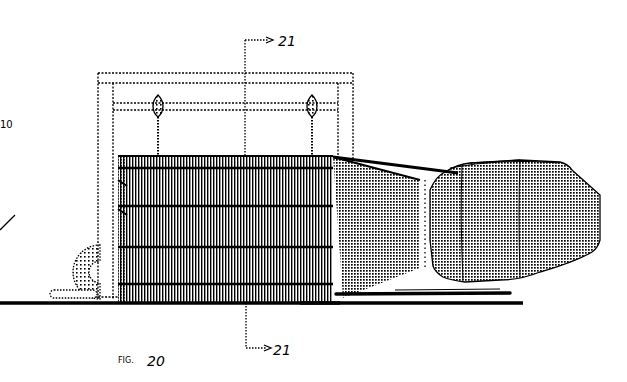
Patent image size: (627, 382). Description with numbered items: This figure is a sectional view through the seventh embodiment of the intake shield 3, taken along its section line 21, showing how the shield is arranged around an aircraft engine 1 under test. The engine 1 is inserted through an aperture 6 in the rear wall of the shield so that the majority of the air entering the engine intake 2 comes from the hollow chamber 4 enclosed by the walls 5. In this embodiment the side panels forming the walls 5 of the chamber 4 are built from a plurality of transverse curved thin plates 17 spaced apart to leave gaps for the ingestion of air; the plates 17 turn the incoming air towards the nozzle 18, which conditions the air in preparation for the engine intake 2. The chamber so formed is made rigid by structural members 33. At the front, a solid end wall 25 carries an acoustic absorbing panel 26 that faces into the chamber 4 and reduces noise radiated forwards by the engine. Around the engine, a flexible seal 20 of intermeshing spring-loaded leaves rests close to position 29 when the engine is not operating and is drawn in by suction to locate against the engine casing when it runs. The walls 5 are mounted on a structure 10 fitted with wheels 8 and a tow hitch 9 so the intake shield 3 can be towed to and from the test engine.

The aircraft engine 1 is at (510, 160).
The engine intake 2 is at (425, 178).
The intake shield 3 is at (133, 156).
The hollow chamber 4 is at (148, 156).
The walls 5 is at (212, 156).
The aperture 6 is at (517, 283).
The wheels 8 is at (82, 247).
The tow hitch 9 is at (57, 292).
The structure 10 is at (98, 125).
The transverse curved thin plates 17 is at (278, 156).
The nozzle 18 is at (372, 156).
The flexible seal 20 is at (470, 165).
The section line 21 is at (365, 156).
The end wall 25 is at (117, 183).
The acoustic absorbing panel 26 is at (117, 212).
The seal rest position 29 is at (497, 293).
The structural members 33 is at (307, 303).